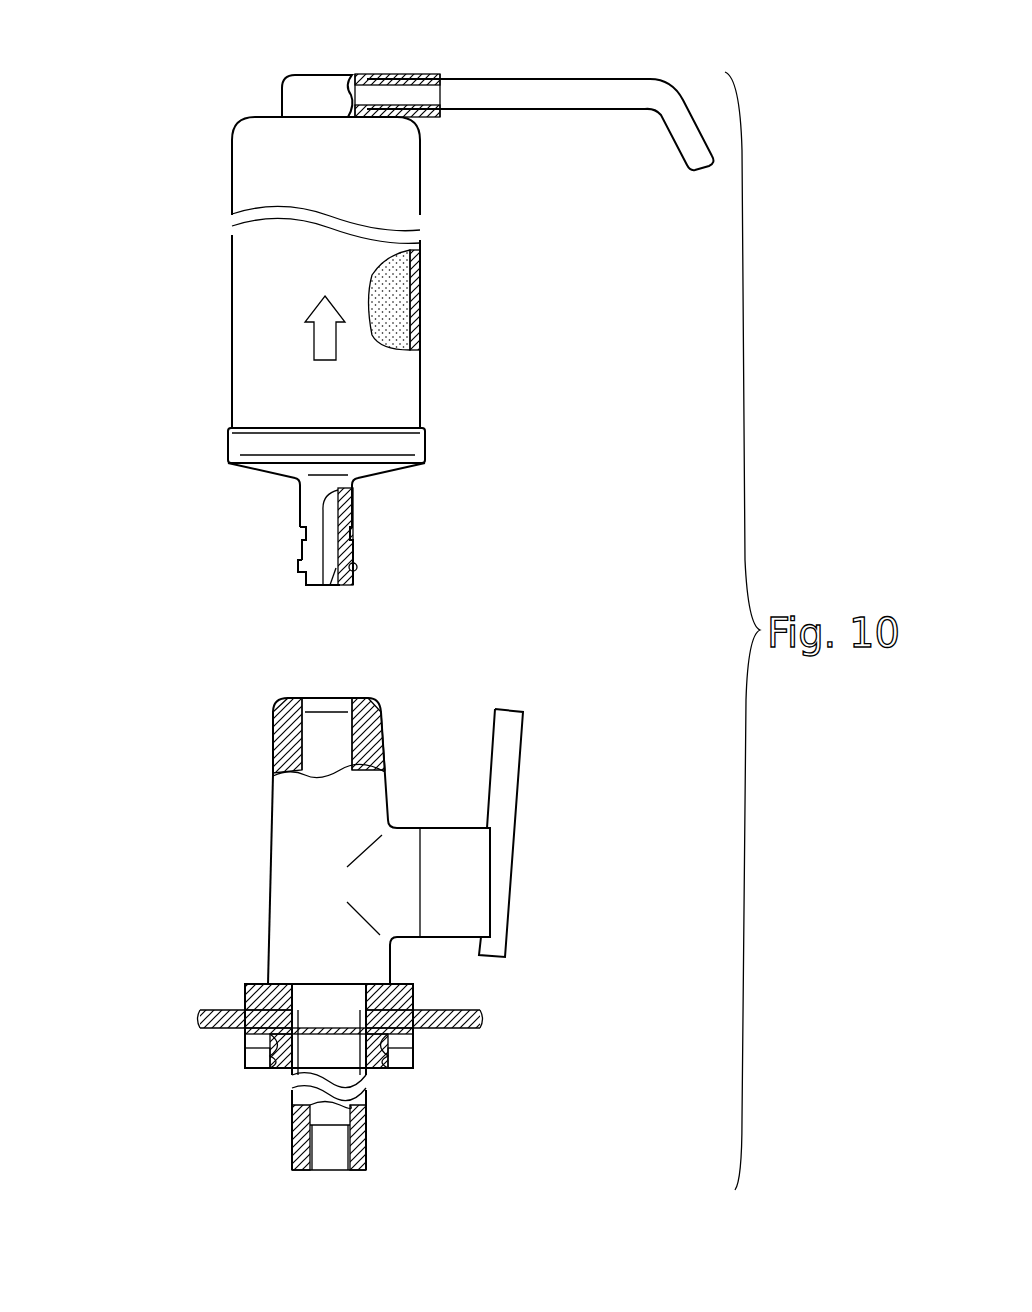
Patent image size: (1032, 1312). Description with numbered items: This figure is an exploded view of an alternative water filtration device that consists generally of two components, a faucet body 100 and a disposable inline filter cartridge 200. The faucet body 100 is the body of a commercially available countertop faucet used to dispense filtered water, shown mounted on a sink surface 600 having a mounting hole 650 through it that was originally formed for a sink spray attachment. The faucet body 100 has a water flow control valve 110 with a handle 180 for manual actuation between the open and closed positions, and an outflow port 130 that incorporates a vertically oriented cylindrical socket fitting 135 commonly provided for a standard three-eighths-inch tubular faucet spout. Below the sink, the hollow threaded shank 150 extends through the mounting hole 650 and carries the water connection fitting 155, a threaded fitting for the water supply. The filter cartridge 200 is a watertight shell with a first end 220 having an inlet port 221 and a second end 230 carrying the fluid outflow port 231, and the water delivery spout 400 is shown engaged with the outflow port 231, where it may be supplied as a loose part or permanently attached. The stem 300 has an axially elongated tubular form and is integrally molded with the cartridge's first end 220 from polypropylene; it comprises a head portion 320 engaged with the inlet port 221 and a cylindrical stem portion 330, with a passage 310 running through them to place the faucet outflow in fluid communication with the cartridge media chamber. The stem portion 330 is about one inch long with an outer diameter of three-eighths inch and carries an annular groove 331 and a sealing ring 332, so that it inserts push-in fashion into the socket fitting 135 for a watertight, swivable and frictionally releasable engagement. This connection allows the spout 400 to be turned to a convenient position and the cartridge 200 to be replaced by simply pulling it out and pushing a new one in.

The faucet body 100 is at (198, 847).
The water flow control valve 110 is at (383, 890).
The outflow port 130 is at (368, 730).
The cylindrical socket fitting 135 is at (328, 737).
The threaded shank 150 is at (310, 1097).
The water connection fitting 155 is at (320, 1140).
The handle 180 is at (508, 765).
The filter cartridge 200 is at (148, 270).
The first end 220 is at (385, 440).
The inlet port 221 is at (356, 474).
The second end 230 is at (287, 130).
The fluid outflow port 231 is at (318, 86).
The stem 300 is at (312, 500).
The passage 310 is at (332, 585).
The head portion 320 is at (398, 536).
The stem portion 330 is at (315, 585).
The annular groove 331 is at (306, 538).
The sealing ring 332 is at (298, 566).
The water delivery spout 400 is at (507, 112).
The sink surface 600 is at (455, 1020).
The mounting hole 650 is at (286, 1017).